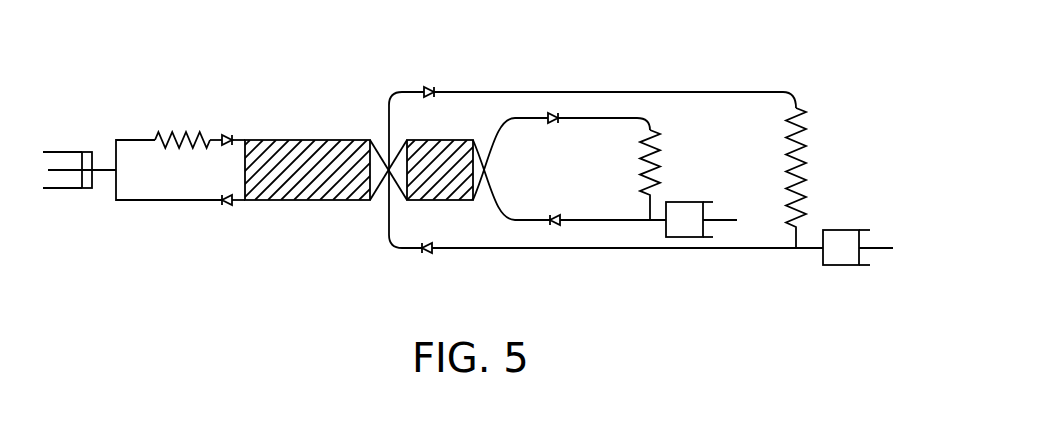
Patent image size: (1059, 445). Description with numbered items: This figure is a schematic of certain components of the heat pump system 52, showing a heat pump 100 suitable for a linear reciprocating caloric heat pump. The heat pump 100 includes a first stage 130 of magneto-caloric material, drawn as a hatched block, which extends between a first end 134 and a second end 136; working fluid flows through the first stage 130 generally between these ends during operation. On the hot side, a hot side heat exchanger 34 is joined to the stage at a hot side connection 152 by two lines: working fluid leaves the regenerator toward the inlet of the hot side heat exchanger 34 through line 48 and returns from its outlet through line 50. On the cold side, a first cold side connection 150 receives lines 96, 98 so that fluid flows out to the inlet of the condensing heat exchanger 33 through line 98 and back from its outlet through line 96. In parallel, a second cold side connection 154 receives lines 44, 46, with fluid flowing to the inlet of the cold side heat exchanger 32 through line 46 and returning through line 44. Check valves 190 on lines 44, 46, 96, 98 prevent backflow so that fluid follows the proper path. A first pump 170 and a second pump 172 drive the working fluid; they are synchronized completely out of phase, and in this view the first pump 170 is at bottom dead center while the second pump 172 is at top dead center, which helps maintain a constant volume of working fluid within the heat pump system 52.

The heat pump system 52 is at (104, 86).
The first pump 170 is at (74, 152).
The hot side heat exchanger 34 is at (182, 133).
The check valve 190 is at (227, 136).
The hot side working fluid supply conduit 48 is at (240, 146).
The second end 136 is at (254, 130).
The heat pump 100 is at (356, 113).
The first cold side connection 150 is at (377, 172).
The first stage 130 is at (318, 185).
The hot side connection 152 is at (250, 168).
The hot side working fluid return conduit 50 is at (173, 200).
The second cold side working fluid supply conduit 98 is at (637, 92).
The first cold side working fluid supply conduit 46 is at (653, 128).
The second cold side connection 154 is at (480, 180).
The first end 134 is at (481, 211).
The first cold side working fluid return conduit 44 is at (580, 219).
The cold side heat exchanger 32 is at (657, 182).
The second pump 172 is at (722, 218).
The condensing heat exchanger 33 is at (790, 178).
The second cold side working fluid return conduit 96 is at (614, 249).